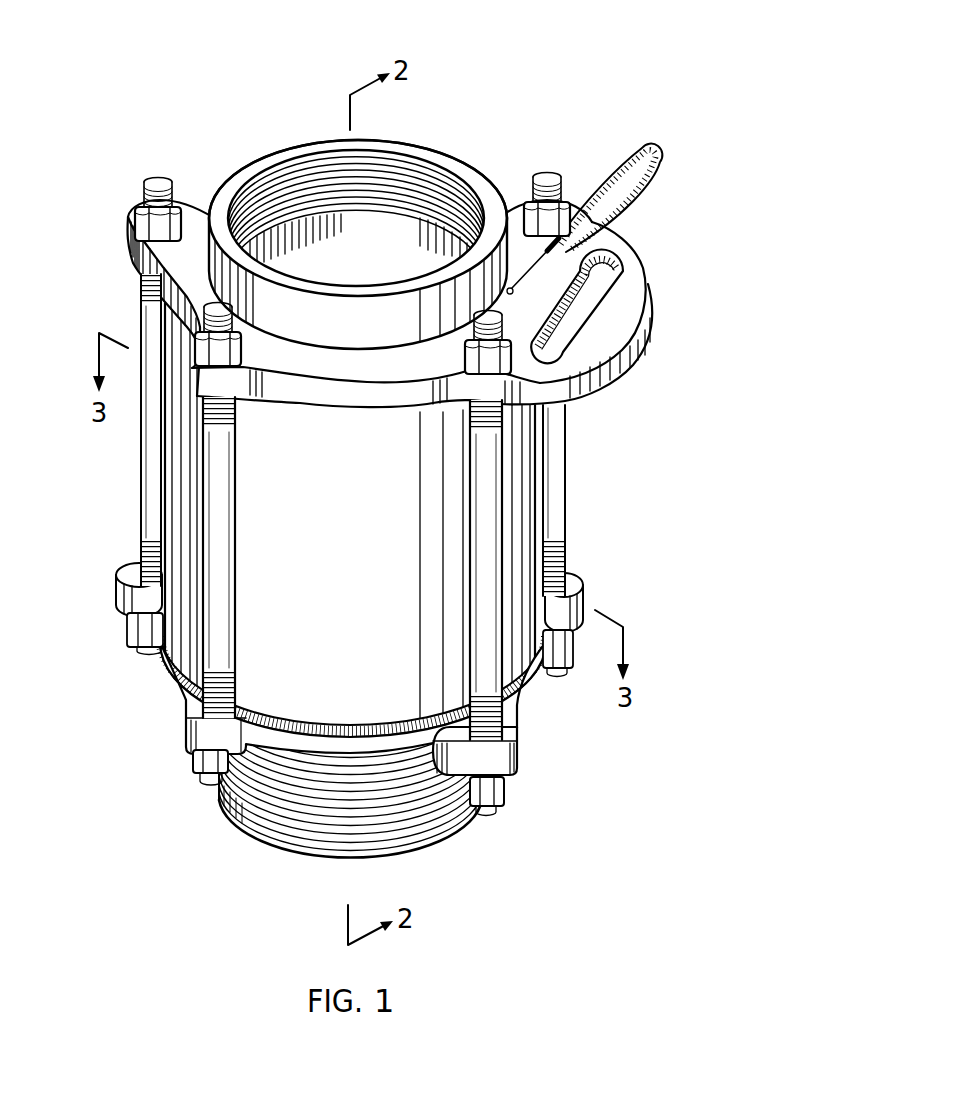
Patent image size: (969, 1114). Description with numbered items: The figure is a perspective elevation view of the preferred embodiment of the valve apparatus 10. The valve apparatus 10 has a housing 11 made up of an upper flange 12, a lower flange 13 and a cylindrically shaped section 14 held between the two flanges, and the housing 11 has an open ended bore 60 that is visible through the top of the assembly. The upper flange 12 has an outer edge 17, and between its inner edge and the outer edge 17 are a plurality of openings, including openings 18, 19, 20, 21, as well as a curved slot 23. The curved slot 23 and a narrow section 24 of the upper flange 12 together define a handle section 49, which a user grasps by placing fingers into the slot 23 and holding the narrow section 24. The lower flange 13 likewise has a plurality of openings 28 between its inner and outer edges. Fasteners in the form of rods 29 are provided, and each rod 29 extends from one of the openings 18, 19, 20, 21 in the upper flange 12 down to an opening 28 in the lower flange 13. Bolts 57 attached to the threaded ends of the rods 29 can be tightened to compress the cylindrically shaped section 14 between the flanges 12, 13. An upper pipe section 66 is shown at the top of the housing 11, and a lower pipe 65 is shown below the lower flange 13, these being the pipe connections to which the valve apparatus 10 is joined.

The valve apparatus 10 is at (627, 67).
The housing 11 is at (190, 496).
The upper flange 12 is at (390, 279).
The lower flange 13 is at (190, 747).
The cylindrically shaped section 14 is at (427, 562).
The outer edge 17 is at (343, 393).
The opening 18 is at (131, 221).
The opening 19 is at (245, 350).
The opening 20 is at (460, 358).
The opening 21 is at (508, 222).
The curved slot 23 is at (600, 290).
The narrow section 24 is at (628, 318).
The opening 28 is at (582, 578).
The rod 29 is at (156, 193).
The handle section 49 is at (643, 225).
The bolt 57 is at (577, 202).
The open ended bore 60 is at (352, 262).
The lower pipe 65 is at (450, 837).
The upper pipe section 66 is at (293, 147).